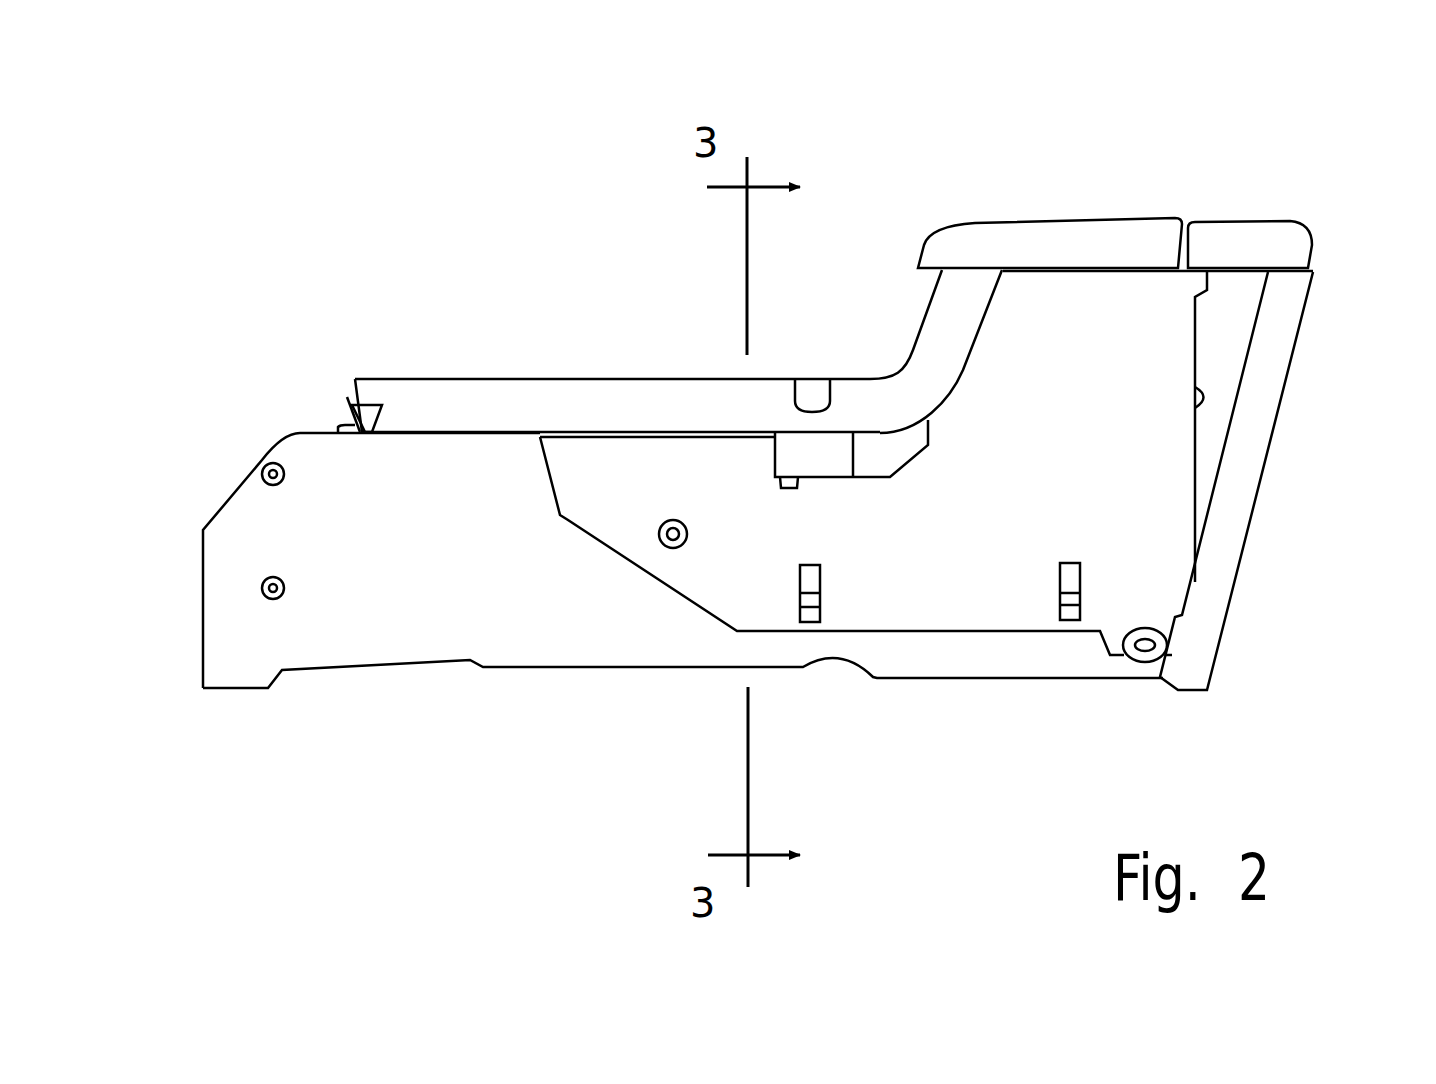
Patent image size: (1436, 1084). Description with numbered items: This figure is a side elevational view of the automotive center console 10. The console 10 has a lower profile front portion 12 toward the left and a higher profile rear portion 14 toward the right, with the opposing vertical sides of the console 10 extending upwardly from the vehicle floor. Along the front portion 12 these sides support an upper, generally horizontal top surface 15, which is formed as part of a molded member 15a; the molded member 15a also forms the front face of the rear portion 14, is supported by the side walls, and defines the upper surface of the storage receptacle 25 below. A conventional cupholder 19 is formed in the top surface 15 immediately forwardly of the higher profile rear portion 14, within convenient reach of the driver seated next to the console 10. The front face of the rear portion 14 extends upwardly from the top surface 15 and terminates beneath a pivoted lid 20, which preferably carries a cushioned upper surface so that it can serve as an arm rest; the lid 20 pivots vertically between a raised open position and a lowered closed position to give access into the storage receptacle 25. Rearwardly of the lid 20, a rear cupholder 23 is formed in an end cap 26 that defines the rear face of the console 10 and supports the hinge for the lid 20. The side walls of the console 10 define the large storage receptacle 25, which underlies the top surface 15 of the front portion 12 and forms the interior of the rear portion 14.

The center console 10 is at (500, 244).
The lower profile front portion 12 is at (406, 340).
The higher profile rear portion 14 is at (1012, 183).
The top surface 15 is at (633, 379).
The molded member 15a is at (353, 385).
The cupholder 19 is at (810, 372).
The pivoted lid 20 is at (1047, 222).
The rear cupholder 23 is at (1260, 222).
The storage receptacle 25 is at (920, 690).
The end cap 26 is at (1227, 578).